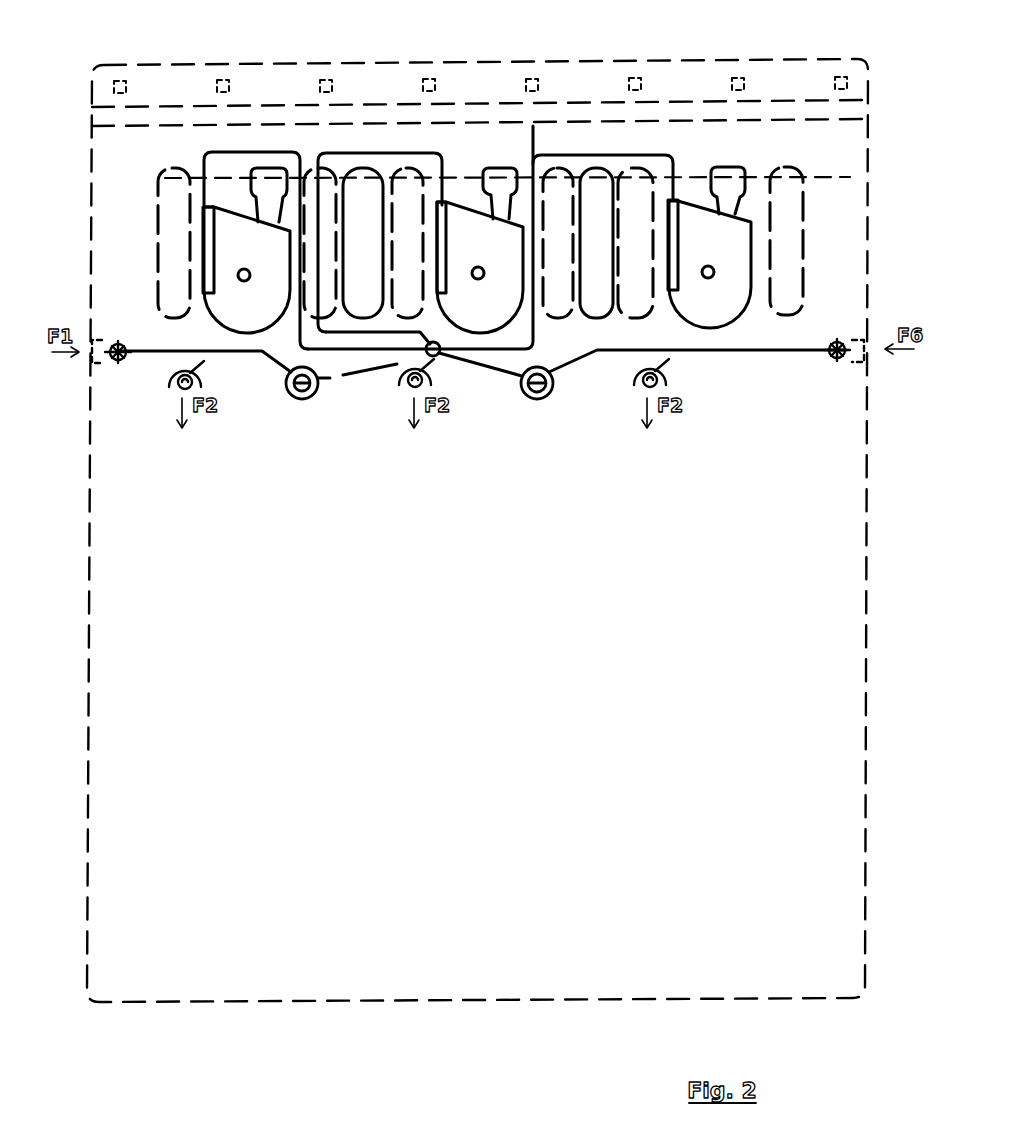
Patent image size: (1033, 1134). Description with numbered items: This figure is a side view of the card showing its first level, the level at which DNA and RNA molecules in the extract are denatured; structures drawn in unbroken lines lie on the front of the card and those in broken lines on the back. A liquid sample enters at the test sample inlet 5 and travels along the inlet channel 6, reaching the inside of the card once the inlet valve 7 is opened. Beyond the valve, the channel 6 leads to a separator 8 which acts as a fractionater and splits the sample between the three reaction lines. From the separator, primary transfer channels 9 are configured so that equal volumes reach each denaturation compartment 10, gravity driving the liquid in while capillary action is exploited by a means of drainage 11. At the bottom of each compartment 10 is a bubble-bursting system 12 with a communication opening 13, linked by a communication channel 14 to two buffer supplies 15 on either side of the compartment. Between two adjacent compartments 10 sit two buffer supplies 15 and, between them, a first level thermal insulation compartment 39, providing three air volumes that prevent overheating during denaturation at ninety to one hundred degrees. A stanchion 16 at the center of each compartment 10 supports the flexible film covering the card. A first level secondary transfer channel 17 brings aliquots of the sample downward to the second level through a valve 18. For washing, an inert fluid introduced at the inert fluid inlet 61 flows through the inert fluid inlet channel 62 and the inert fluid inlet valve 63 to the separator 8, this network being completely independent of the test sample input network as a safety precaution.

The test sample inlet 5 is at (115, 378).
The inlet channel 6 is at (148, 354).
The inlet valve 7 is at (310, 399).
The separator 8 is at (442, 360).
The primary transfer channel 9 is at (368, 152).
The denaturation compartment 10 is at (710, 228).
The means of drainage 11 is at (678, 257).
The bubble-bursting system 12 is at (740, 190).
The communication opening 13 is at (503, 170).
The communication channel 14 is at (236, 176).
The buffer supply 15 is at (805, 292).
The stanchion 16 is at (716, 272).
The first level secondary transfer channel 17 is at (690, 378).
The valve 18 is at (434, 368).
The first level thermal insulation compartment 39 is at (598, 183).
The inert fluid inlet 61 is at (858, 364).
The inert fluid inlet channel 62 is at (497, 371).
The inert fluid inlet valve 63 is at (547, 403).